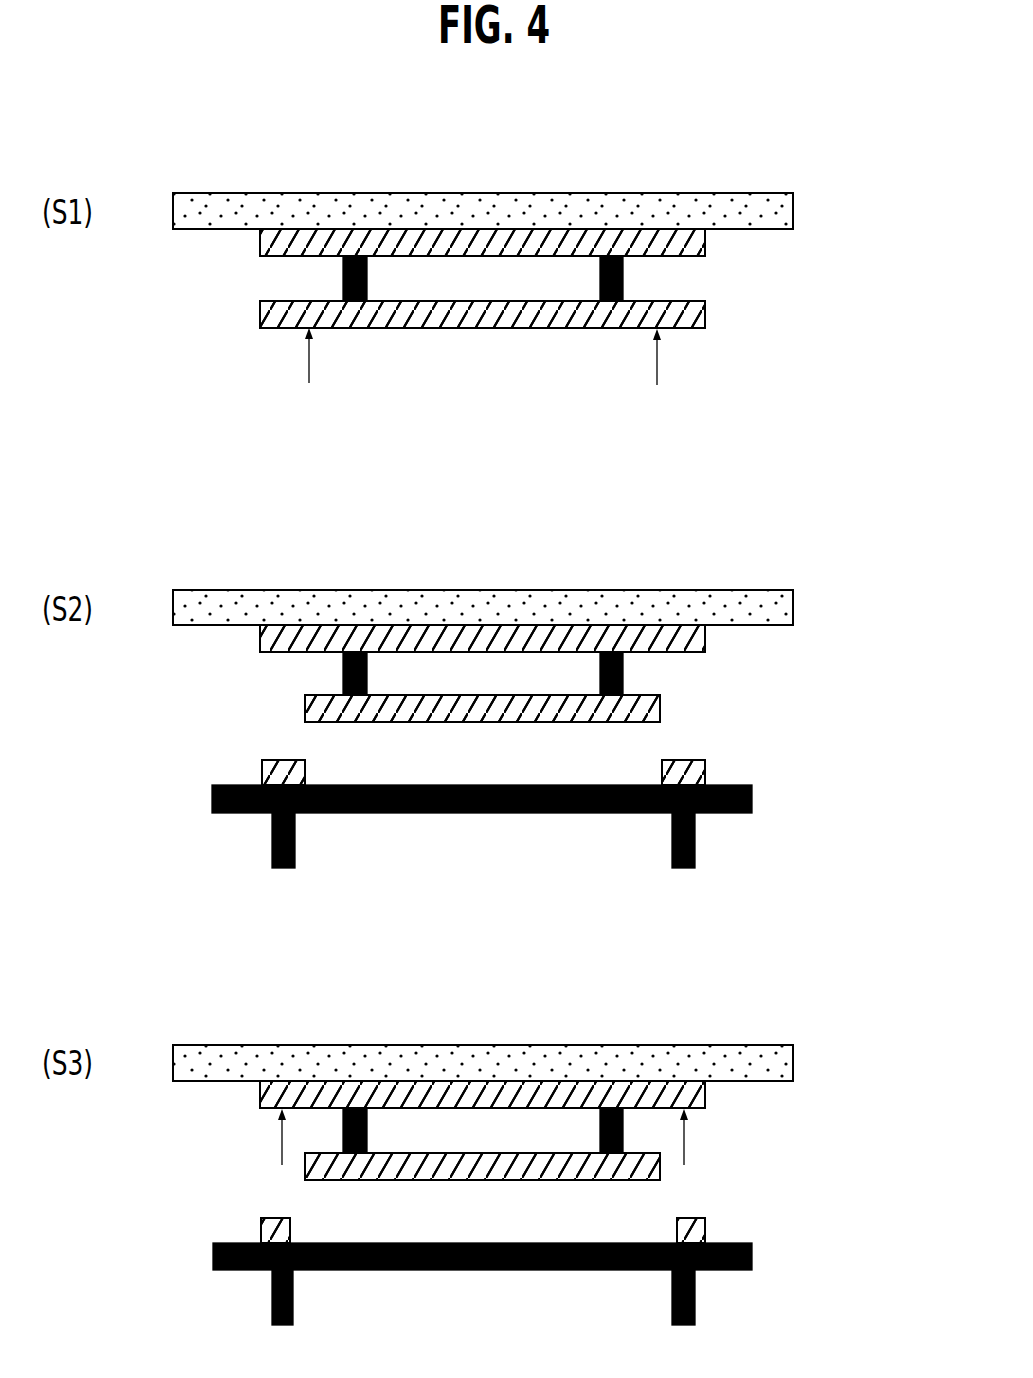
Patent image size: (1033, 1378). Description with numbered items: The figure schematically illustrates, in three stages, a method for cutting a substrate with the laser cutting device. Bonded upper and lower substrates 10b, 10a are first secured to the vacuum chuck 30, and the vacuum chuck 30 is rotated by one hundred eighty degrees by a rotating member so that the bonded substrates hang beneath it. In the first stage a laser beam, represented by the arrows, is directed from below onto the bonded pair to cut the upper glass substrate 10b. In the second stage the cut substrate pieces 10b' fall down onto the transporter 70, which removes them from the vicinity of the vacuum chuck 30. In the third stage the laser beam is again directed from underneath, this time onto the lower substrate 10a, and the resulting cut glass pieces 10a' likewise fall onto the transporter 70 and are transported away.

The vacuum chuck 30 is at (793, 213).
The lower substrate 10a is at (551, 689).
The upper substrate 10b is at (502, 758).
The cut substrate pieces 10b' is at (572, 781).
The cut glass pieces 10a' is at (556, 1222).
The transporter 70 is at (380, 813).